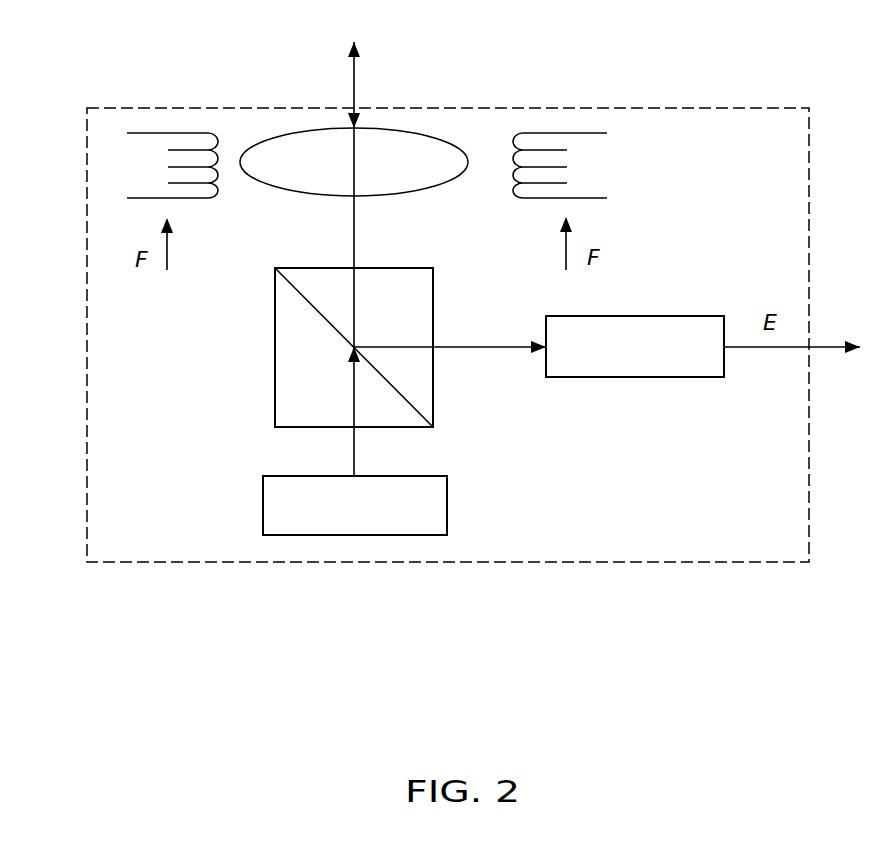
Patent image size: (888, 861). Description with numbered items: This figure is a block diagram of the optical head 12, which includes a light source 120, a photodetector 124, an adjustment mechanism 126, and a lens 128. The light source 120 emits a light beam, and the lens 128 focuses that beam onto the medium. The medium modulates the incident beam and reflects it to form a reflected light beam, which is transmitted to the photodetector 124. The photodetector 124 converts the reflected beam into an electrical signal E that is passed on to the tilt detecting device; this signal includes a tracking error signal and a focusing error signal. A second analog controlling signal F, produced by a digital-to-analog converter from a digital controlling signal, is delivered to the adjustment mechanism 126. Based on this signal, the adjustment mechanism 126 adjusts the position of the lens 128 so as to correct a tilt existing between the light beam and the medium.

The optical head 12 is at (777, 497).
The light source 120 is at (417, 490).
The photodetector 124 is at (653, 358).
The adjustment mechanism 126 is at (135, 172).
The lens 128 is at (442, 150).